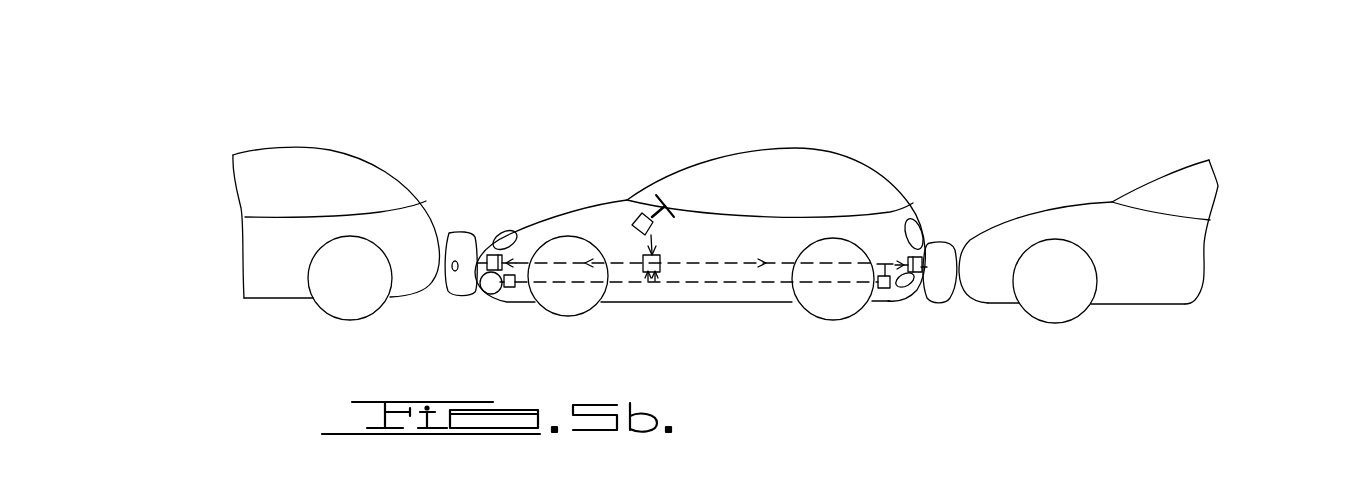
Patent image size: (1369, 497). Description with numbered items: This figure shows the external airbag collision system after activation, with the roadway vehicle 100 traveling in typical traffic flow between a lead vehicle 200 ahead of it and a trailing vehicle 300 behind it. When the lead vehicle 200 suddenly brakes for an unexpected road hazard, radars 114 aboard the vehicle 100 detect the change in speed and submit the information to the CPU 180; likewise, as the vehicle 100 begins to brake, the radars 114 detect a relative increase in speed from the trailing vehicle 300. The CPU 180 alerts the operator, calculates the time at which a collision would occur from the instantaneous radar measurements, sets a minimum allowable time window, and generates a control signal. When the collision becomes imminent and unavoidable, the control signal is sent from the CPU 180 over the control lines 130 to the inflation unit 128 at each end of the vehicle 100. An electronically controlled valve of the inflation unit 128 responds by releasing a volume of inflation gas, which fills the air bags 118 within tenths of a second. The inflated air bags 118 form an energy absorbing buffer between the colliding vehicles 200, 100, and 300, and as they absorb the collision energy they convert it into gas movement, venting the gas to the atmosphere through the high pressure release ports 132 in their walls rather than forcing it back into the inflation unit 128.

The roadway vehicle 100 is at (600, 154).
The radars 114 is at (510, 287).
The air bags 118 is at (456, 284).
The inflation unit 128 is at (501, 255).
The control lines 130 is at (741, 259).
The high pressure release ports 132 is at (461, 226).
The CPU 180 is at (660, 265).
The lead vehicle 200 is at (271, 132).
The trailing vehicle 300 is at (1065, 187).